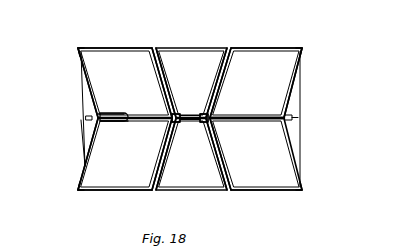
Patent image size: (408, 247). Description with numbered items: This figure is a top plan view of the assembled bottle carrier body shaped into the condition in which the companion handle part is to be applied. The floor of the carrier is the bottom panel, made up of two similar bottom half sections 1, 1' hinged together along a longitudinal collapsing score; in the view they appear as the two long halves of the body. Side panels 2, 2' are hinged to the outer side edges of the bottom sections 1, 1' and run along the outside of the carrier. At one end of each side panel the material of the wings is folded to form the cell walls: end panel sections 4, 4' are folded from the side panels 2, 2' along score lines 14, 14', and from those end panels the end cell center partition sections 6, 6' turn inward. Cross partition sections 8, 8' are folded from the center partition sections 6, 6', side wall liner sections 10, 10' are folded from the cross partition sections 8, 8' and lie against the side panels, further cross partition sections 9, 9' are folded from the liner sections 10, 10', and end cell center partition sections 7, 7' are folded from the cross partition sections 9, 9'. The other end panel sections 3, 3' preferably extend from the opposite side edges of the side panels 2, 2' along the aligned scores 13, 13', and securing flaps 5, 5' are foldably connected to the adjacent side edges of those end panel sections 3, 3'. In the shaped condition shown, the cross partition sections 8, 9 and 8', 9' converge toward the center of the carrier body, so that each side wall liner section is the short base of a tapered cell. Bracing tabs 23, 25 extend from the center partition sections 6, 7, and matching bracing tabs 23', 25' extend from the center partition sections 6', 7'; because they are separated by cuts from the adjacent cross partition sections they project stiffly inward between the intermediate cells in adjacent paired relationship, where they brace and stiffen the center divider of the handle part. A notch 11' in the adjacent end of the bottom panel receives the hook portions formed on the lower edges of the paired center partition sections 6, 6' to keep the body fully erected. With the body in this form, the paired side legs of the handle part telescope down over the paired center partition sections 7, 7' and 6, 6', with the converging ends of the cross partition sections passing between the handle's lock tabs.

The bottom half section 1 is at (182, 93).
The bottom half section 1' is at (66, 143).
The side panel 2 is at (190, 32).
The side panel 2' is at (190, 208).
The end panel section 3 is at (74, 83).
The end panel section 3' is at (73, 155).
The end panel section 4 is at (306, 117).
The end panel section 4' is at (271, 155).
The securing flap 5 is at (107, 103).
The securing flap 5' is at (114, 134).
The end cell center partition section 6 is at (247, 104).
The end cell center partition section 6' is at (247, 131).
The end cell center partition section 7 is at (125, 83).
The end cell center partition section 7' is at (125, 155).
The cross partition section 8 is at (225, 83).
The cross partition section 8' is at (229, 155).
The cross partition section 9 is at (155, 83).
The cross partition section 9' is at (152, 155).
The side wall liner section 10 is at (191, 68).
The side wall liner section 10' is at (191, 155).
The notch 11' is at (311, 109).
The score 13 is at (63, 42).
The score 13' is at (62, 197).
The score line 14 is at (321, 45).
The score line 14' is at (320, 191).
The bracing tab 23 is at (206, 97).
The bracing tab 23' is at (207, 133).
The bracing tab 25 is at (184, 97).
The bracing tab 25' is at (177, 133).